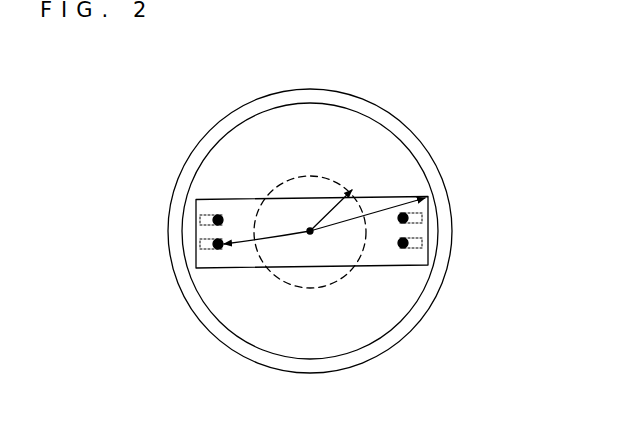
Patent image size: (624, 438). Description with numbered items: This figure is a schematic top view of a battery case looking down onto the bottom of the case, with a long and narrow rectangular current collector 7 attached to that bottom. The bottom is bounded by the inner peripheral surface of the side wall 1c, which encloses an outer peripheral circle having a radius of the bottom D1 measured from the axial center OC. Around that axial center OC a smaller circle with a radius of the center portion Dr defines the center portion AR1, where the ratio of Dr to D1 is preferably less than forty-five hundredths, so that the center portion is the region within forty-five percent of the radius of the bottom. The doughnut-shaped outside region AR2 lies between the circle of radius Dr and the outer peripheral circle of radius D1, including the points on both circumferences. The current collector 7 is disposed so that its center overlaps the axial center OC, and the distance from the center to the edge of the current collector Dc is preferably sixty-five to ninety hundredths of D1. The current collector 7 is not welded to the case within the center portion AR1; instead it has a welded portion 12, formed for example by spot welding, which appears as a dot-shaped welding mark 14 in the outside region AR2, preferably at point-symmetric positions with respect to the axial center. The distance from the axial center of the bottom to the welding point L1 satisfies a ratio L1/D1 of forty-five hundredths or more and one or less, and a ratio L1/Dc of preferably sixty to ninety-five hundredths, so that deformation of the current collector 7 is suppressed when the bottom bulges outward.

The side wall 1c is at (432, 303).
The current collector 7 is at (394, 197).
The welded portion 12 is at (227, 257).
The welding mark 14 is at (213, 220).
The radius of the bottom D1 is at (310, 231).
The center portion AR1 is at (320, 178).
The outside region AR2 is at (245, 328).
The axial center OC is at (308, 245).
The distance from the axial center of the bottom to the welding point L1 is at (324, 221).
The radius of the center portion Dr is at (333, 209).
The distance from the center to the edge of the current collector Dc is at (348, 236).